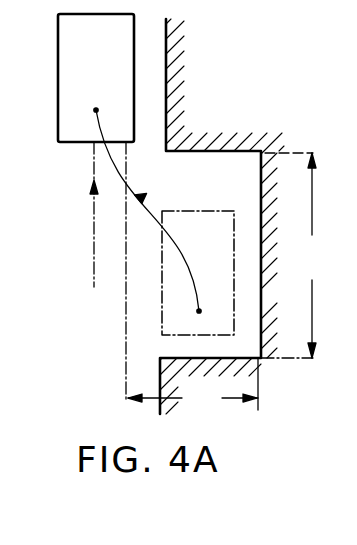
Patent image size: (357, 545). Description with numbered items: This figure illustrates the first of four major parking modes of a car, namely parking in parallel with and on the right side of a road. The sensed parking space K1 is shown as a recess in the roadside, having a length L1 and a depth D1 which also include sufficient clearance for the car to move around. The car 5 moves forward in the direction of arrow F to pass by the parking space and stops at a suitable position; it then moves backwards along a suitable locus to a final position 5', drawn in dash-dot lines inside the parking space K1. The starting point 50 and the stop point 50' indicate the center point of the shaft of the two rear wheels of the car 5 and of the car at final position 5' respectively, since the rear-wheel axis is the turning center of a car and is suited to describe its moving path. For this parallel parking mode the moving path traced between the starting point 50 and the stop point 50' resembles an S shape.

The car 5 is at (81, 78).
The starting point 50 is at (146, 197).
The final position of the car 5' is at (198, 251).
The stop point 50' is at (218, 320).
The parking space K1 is at (237, 165).
The length of parking space L1 is at (296, 255).
The depth of parking space D1 is at (192, 278).
The arrow F is at (92, 240).